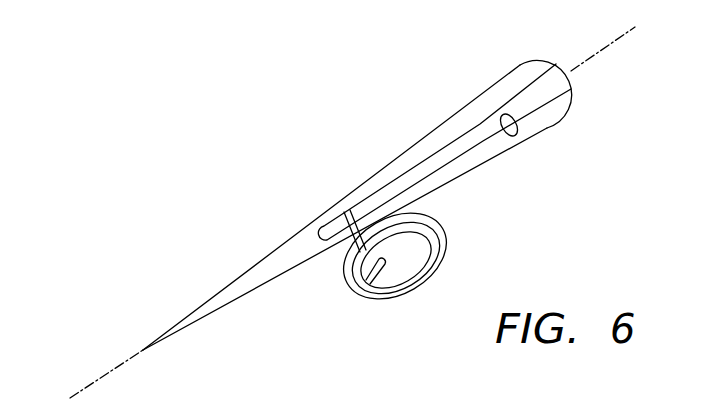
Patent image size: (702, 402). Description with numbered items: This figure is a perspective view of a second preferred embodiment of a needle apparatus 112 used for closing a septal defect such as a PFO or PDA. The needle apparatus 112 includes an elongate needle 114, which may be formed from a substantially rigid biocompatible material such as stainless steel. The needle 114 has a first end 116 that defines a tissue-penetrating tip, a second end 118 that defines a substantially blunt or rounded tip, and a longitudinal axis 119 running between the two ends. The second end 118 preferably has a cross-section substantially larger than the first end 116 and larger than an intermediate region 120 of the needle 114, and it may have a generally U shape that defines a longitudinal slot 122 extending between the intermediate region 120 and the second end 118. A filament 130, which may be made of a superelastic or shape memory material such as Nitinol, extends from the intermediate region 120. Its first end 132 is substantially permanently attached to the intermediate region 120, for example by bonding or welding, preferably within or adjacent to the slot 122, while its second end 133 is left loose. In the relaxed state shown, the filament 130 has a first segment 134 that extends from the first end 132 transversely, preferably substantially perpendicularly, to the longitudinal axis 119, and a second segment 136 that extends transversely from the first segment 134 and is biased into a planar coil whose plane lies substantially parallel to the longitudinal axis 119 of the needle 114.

The needle apparatus 112 is at (356, 138).
The elongate needle 114 is at (386, 209).
The first end 116 is at (170, 339).
The second end 118 is at (567, 115).
The longitudinal axis 119 is at (619, 44).
The intermediate region 120 is at (351, 191).
The longitudinal slot 122 is at (510, 137).
The filament 130 is at (383, 274).
The first end of the filament 132 is at (338, 215).
The second end of the filament 133 is at (389, 266).
The first segment 134 is at (338, 258).
The second segment 136 is at (364, 290).